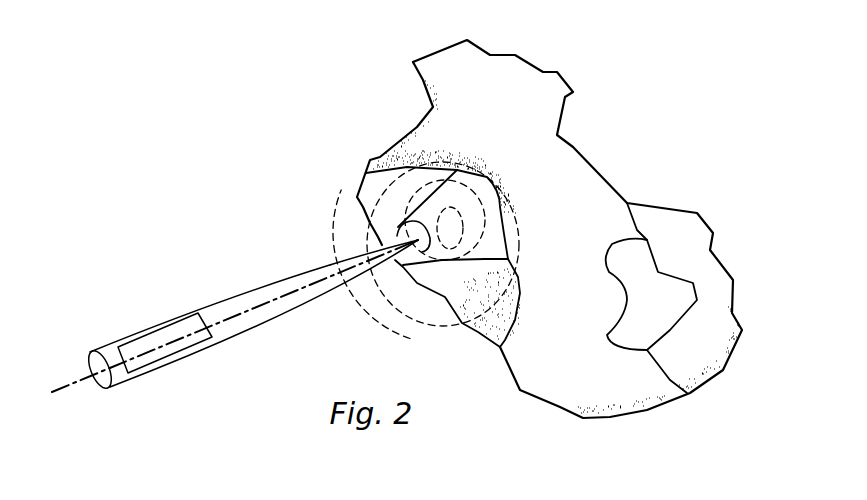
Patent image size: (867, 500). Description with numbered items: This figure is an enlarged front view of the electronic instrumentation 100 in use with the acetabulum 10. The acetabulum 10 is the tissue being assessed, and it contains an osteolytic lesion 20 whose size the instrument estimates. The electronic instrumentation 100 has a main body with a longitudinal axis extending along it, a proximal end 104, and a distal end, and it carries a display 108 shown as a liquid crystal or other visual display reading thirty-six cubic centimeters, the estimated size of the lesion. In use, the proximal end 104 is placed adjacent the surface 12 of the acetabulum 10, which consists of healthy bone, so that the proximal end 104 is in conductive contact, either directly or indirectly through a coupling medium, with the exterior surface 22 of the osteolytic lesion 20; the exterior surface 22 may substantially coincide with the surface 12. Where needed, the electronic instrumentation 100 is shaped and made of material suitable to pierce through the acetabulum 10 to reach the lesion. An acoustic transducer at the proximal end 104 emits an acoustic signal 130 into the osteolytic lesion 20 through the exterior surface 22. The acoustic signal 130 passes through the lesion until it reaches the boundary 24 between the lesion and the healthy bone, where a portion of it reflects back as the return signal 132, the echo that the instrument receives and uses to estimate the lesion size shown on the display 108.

The acetabulum 10 is at (502, 116).
The surface 12 is at (498, 307).
The osteolytic lesion 20 is at (386, 208).
The exterior surface 22 is at (422, 250).
The boundary 24 is at (517, 221).
The electronic instrumentation 100 is at (230, 305).
The proximal end 104 is at (344, 244).
The display 108 is at (130, 350).
The acoustic signal 130 is at (485, 237).
The return signal 132 is at (380, 317).